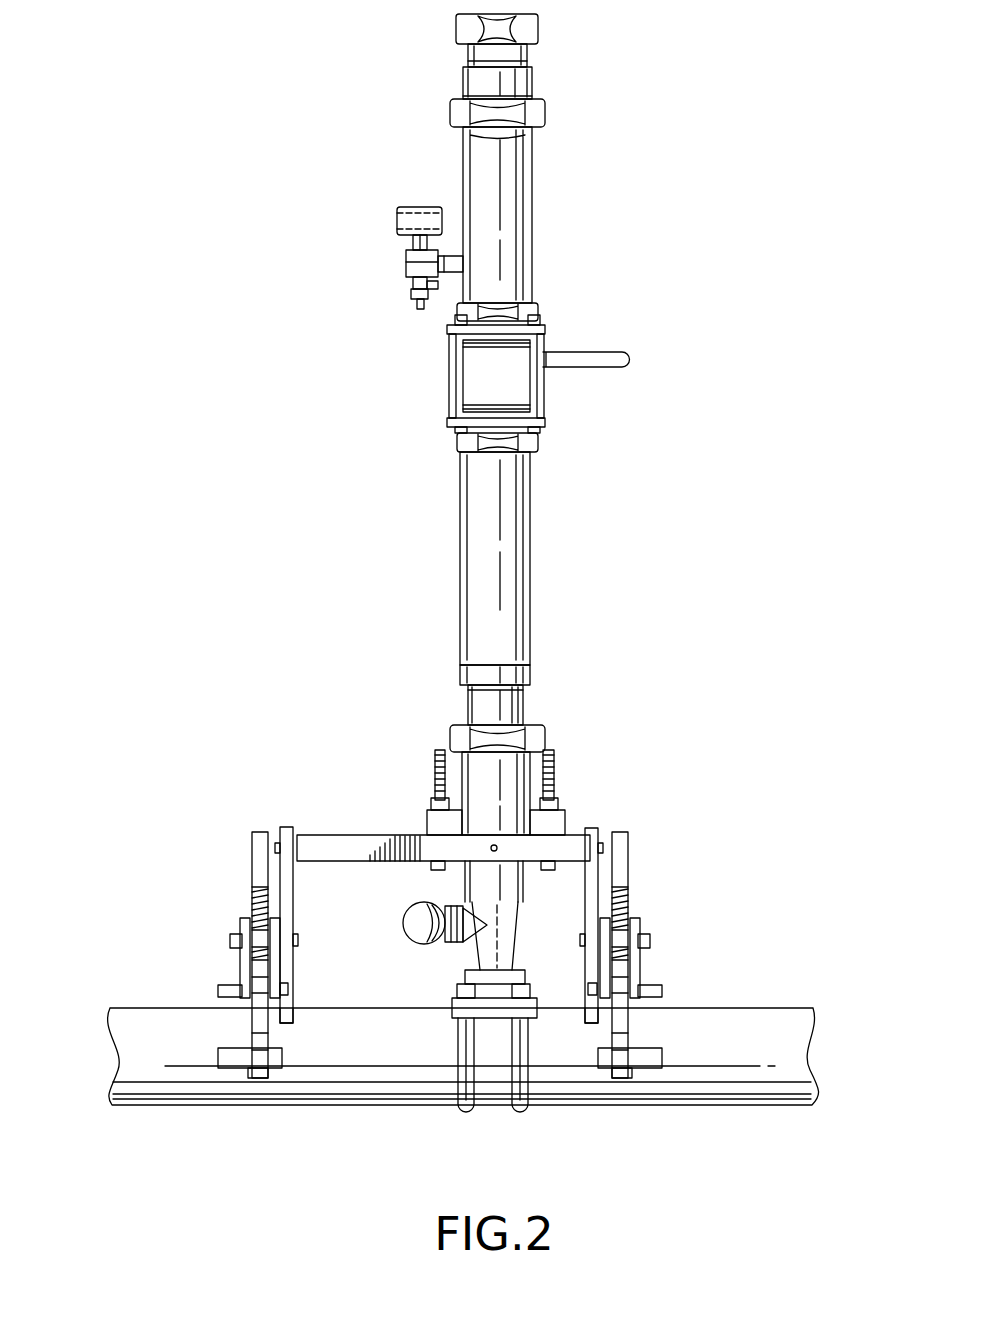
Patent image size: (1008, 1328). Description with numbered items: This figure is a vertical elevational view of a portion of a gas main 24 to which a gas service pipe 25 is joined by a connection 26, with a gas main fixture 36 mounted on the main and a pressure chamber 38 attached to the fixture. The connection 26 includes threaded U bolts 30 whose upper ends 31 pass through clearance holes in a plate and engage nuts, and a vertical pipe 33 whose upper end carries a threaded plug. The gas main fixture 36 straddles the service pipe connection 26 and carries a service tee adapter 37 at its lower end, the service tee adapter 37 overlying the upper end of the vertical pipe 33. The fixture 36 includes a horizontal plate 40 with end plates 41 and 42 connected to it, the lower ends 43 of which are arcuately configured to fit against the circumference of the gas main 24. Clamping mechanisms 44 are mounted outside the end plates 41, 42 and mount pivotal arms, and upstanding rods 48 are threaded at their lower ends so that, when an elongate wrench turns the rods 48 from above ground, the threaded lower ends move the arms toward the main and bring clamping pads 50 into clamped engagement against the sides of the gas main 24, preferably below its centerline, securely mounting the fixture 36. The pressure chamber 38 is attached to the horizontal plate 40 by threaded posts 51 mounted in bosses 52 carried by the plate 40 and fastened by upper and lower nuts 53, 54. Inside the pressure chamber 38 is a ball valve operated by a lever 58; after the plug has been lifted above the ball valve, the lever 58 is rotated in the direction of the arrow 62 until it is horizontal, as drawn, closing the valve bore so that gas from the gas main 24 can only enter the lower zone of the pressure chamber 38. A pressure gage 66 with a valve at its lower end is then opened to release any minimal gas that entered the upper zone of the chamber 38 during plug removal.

The gas main 24 is at (785, 1009).
The gas service pipe 25 is at (410, 925).
The connection 26 is at (450, 904).
The threaded U bolts 30 is at (467, 1112).
The upper ends 31 is at (455, 990).
The vertical pipe 33 is at (513, 938).
The gas main fixture 36 is at (350, 826).
The service tee adapter 37 is at (567, 832).
The pressure chamber 38 is at (544, 546).
The horizontal plate 40 is at (586, 832).
The end plate 41 is at (607, 878).
The end plate 42 is at (278, 828).
The lower ends 43 is at (285, 1023).
The clamping mechanisms 44 is at (250, 912).
The upstanding rods 48 is at (630, 853).
The clamping pads 50 is at (227, 1068).
The threaded posts 51 is at (536, 785).
The bosses 52 is at (577, 814).
The upper nuts 53 is at (435, 802).
The lower nuts 54 is at (433, 864).
The lever 58 is at (612, 348).
The arrow 62 is at (570, 330).
The pressure gage 66 is at (407, 222).